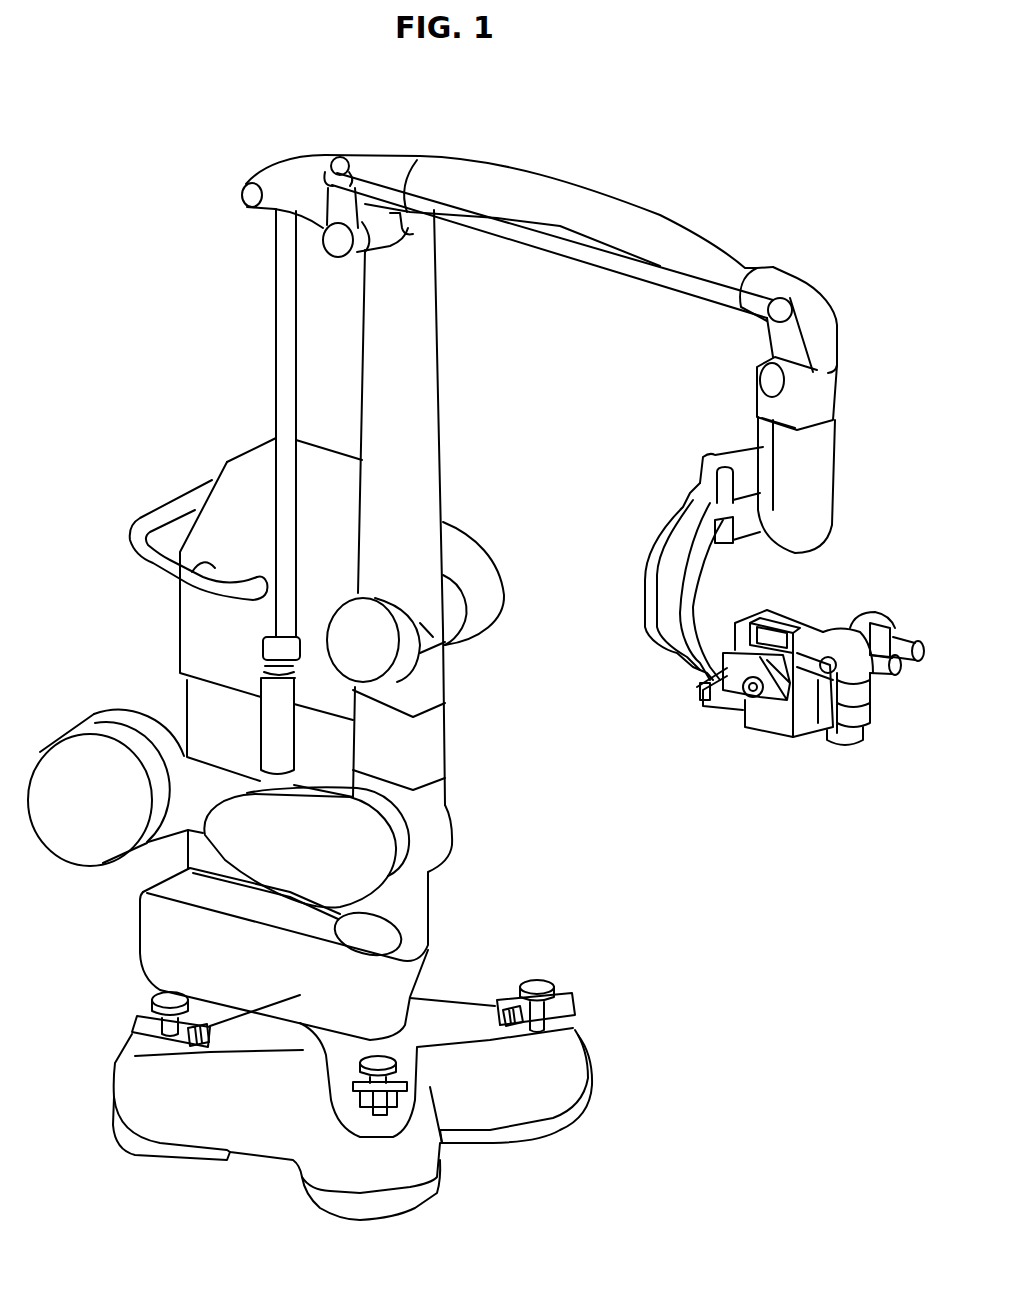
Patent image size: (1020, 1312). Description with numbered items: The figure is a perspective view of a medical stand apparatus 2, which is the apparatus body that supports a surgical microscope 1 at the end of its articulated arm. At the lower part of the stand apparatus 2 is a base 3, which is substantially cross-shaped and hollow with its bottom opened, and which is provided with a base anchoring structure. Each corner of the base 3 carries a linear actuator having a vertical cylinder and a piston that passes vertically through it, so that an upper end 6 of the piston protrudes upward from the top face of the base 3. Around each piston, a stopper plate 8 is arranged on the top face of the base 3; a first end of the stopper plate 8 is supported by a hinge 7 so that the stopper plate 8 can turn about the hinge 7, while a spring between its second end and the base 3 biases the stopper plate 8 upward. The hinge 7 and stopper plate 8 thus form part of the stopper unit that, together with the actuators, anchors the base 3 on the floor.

The surgical microscope 1 is at (863, 703).
The medical stand apparatus 2 is at (163, 383).
The base 3 is at (520, 1118).
The upper end of the piston 6 is at (157, 995).
The hinge 7 is at (207, 1040).
The stopper plate 8 is at (133, 1030).